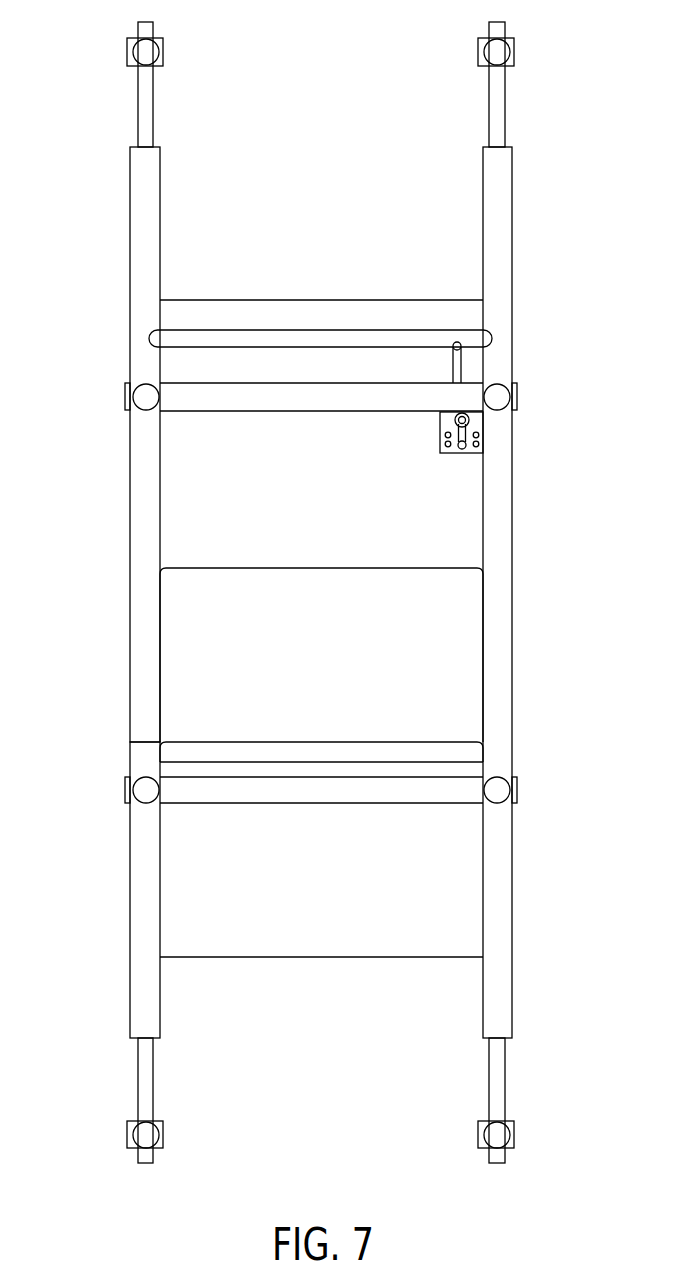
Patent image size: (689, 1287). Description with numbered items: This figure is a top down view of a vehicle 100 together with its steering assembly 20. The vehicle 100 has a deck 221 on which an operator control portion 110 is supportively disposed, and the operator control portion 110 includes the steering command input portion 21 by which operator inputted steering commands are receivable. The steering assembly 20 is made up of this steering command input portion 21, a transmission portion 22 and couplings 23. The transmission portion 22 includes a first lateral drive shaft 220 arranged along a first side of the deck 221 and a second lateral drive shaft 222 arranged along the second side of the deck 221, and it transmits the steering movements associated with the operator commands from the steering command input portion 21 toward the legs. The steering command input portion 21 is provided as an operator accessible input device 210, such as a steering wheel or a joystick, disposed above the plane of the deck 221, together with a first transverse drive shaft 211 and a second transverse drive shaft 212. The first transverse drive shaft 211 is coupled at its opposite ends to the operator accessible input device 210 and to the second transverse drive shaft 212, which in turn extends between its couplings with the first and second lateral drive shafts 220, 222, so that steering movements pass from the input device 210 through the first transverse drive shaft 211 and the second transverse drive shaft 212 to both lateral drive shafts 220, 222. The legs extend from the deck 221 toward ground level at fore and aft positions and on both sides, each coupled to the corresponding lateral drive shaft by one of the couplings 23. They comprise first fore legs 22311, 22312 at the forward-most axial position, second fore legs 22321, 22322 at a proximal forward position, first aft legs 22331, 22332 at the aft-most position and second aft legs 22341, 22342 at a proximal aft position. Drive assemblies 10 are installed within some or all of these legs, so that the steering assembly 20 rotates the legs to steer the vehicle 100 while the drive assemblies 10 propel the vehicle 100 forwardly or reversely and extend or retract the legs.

The drive assembly 10 is at (322, 594).
The steering assembly 20 is at (320, 594).
The steering command input portion 21 is at (408, 462).
The operator control portion 110 is at (408, 462).
The transmission portion 22 is at (526, 748).
The couplings 23 is at (132, 46).
The vehicle 100 is at (322, 594).
The operator accessible input device 210 is at (460, 450).
The first transverse drive shaft 211 is at (452, 350).
The second transverse drive shaft 212 is at (347, 333).
The first lateral drive shaft 220 is at (505, 232).
The deck 221 is at (167, 525).
The second lateral drive shaft 222 is at (135, 997).
The first fore leg 22311 is at (133, 54).
The first fore leg 22312 is at (506, 52).
The second fore leg 22321 is at (133, 400).
The second fore leg 22322 is at (506, 398).
The first aft leg 22331 is at (133, 1138).
The first aft leg 22332 is at (506, 1137).
The second aft leg 22341 is at (133, 793).
The second aft leg 22342 is at (506, 792).